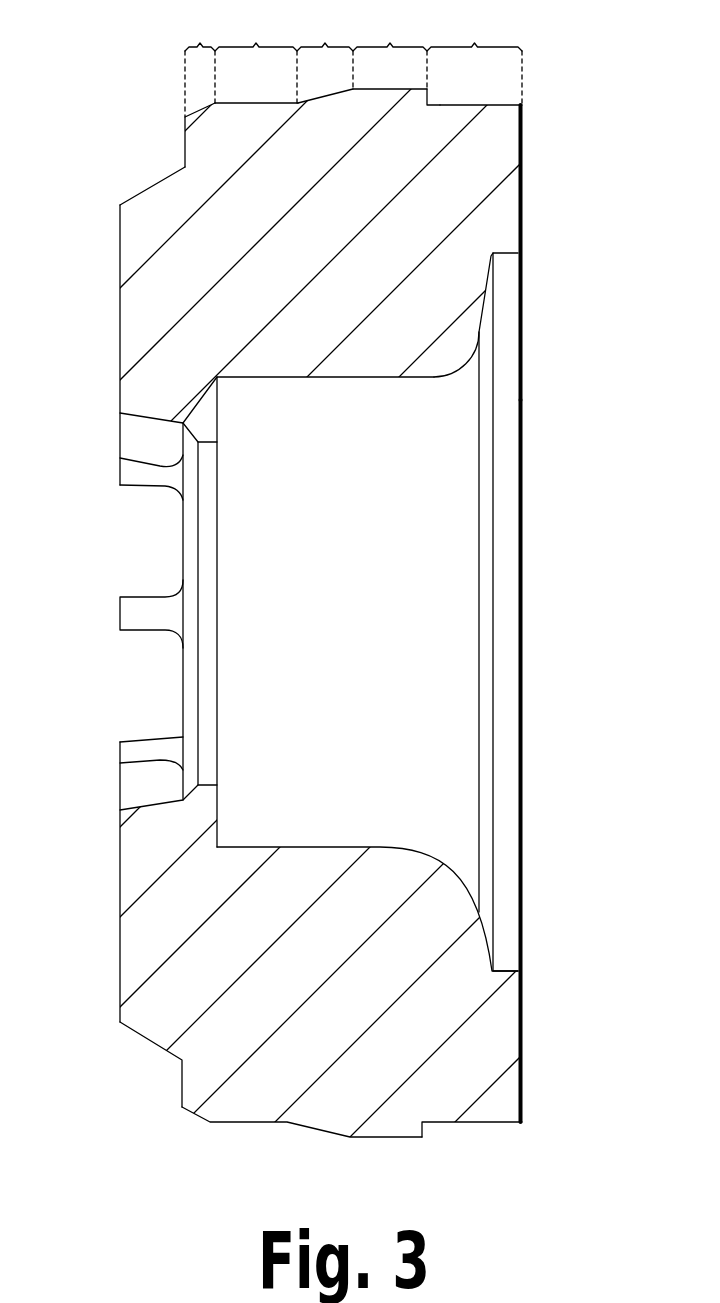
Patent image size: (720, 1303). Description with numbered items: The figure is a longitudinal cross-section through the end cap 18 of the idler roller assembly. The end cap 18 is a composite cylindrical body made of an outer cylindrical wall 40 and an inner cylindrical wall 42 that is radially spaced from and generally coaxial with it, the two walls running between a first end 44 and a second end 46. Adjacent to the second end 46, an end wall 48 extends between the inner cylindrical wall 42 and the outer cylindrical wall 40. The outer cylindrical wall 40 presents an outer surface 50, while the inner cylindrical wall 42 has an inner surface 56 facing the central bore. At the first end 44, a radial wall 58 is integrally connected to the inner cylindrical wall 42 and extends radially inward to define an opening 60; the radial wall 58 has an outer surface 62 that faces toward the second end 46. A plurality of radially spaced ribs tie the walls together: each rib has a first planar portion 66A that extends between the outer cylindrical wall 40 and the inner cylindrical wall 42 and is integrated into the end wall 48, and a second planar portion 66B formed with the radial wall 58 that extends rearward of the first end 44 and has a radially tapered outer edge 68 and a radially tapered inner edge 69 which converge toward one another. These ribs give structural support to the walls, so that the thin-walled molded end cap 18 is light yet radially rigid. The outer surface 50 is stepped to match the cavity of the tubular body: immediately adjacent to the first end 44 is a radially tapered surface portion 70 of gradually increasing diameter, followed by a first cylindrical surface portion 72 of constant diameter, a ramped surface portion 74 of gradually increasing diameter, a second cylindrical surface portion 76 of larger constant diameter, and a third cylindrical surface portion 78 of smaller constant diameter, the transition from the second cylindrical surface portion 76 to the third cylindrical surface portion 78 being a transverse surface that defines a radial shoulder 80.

The end cap 18 is at (120, 927).
The outer cylindrical wall 40 is at (238, 1123).
The inner cylindrical wall 42 is at (381, 847).
The first end 44 is at (185, 141).
The second end 46 is at (522, 133).
The end wall 48 is at (510, 204).
The outer surface 50 is at (473, 1125).
The inner surface 56 is at (267, 847).
The radial wall 58 is at (208, 410).
The opening 60 is at (215, 548).
The outer surface 62 is at (218, 412).
The first planar portion 66A is at (413, 292).
The second planar portion 66B is at (155, 262).
The radially tapered outer edge 68 is at (148, 188).
The radially tapered inner edge 69 is at (147, 422).
The radially tapered surface portion 70 is at (196, 60).
The first cylindrical surface portion 72 is at (256, 53).
The ramped surface portion 74 is at (325, 53).
The second cylindrical surface portion 76 is at (390, 46).
The third cylindrical surface portion 78 is at (481, 54).
The radial shoulder 80 is at (428, 97).